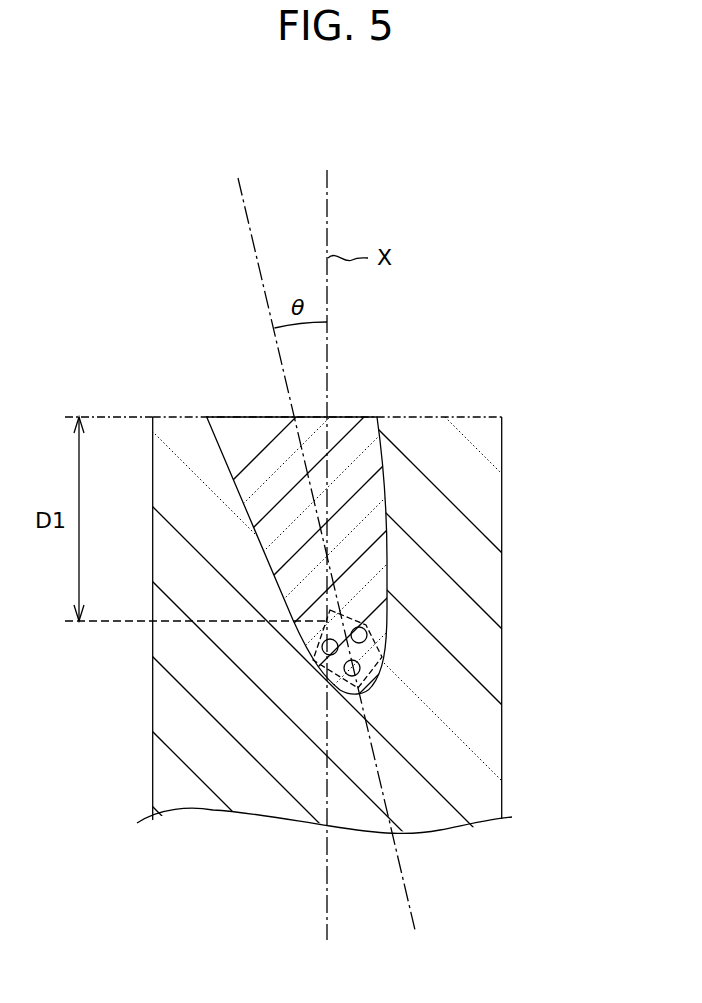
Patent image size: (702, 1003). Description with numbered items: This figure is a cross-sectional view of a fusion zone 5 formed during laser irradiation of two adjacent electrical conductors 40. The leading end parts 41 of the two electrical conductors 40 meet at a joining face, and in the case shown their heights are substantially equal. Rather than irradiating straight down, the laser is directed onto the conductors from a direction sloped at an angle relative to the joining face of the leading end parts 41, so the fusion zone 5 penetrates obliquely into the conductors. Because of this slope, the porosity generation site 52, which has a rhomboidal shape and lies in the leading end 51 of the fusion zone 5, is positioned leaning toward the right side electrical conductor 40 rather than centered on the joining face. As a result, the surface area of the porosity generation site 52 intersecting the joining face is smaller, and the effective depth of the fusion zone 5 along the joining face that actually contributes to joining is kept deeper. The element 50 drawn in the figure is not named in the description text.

The fusion zone 5 is at (240, 440).
The electrical conductor 40 is at (472, 278).
The leading end part 41 is at (440, 428).
The optical fiber 50 is at (368, 638).
The leading end of the fusion zone 51 is at (364, 697).
The porosity generation site 52 is at (383, 676).